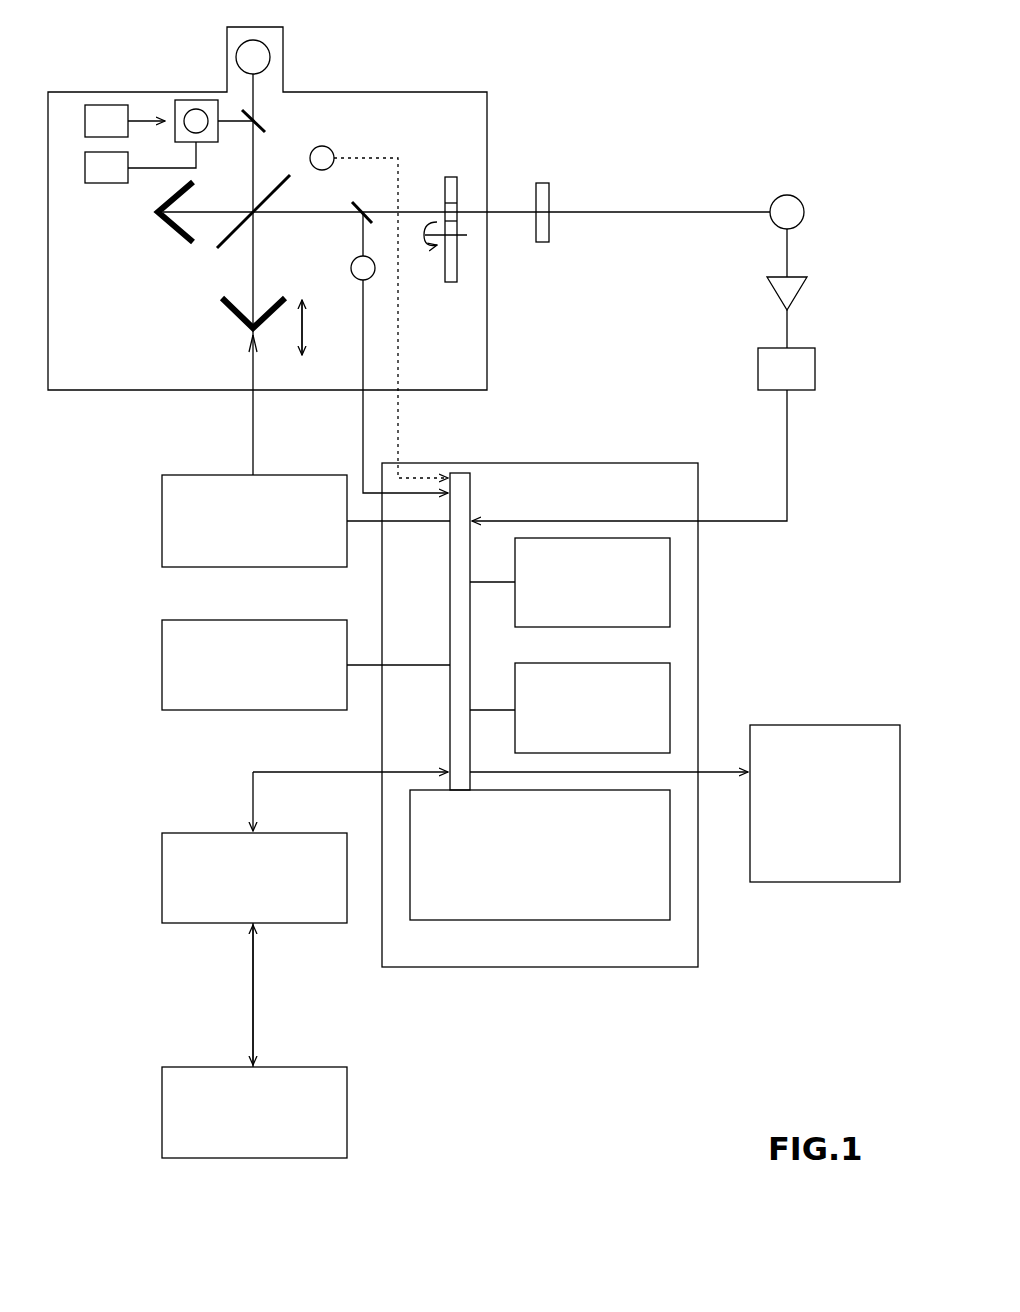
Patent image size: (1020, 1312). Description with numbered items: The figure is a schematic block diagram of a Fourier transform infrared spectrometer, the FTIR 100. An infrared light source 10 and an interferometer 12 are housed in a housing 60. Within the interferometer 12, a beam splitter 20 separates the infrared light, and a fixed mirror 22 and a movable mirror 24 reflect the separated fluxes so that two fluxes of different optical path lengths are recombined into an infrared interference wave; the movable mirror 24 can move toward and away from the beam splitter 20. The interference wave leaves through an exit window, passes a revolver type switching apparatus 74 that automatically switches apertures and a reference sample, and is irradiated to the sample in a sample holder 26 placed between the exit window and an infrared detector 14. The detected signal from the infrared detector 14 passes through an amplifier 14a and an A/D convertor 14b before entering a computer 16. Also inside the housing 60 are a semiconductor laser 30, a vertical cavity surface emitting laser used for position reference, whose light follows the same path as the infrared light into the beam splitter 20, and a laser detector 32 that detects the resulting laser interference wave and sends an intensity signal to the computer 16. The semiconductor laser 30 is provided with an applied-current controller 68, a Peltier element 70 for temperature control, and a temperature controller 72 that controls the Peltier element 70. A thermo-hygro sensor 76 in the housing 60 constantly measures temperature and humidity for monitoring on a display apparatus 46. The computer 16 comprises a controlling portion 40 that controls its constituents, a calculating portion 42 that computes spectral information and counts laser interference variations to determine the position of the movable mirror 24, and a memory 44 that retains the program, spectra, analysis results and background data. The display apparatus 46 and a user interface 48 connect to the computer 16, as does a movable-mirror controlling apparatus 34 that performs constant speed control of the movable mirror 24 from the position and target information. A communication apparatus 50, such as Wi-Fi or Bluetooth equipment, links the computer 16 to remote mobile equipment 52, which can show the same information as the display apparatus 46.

The FTIR 100 is at (828, 52).
The infrared light source 10 is at (270, 57).
The interferometer 12 is at (181, 292).
The infrared detector 14 is at (785, 193).
The amplifier 14a is at (775, 290).
The A/D convertor 14b is at (757, 366).
The computer 16 is at (540, 750).
The beam splitter 20 is at (283, 175).
The fixed mirror 22 is at (172, 228).
The movable mirror 24 is at (225, 310).
The sample holder 26 is at (535, 185).
The semiconductor laser 30 is at (192, 100).
The laser detector 32 is at (352, 268).
The movable-mirror controlling apparatus 34 is at (160, 521).
The controlling portion 40 is at (570, 582).
The calculating portion 42 is at (570, 708).
The memory 44 is at (540, 855).
The display apparatus 46 is at (685, 788).
The user interface 48 is at (160, 665).
The communication apparatus 50 is at (160, 878).
The mobile equipment 52 is at (160, 1113).
The housing 60 is at (433, 92).
The applied-current controller 68 is at (140, 162).
The Peltier element 70 is at (172, 100).
The temperature controller 72 is at (125, 121).
The switching apparatus 74 is at (443, 185).
The thermo-hygro sensor 76 is at (333, 150).